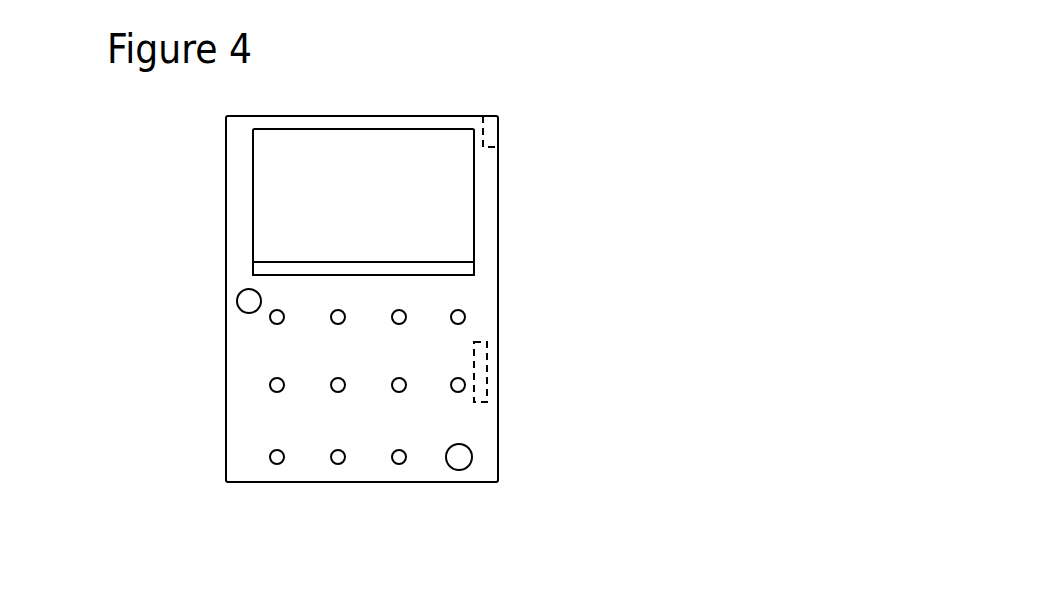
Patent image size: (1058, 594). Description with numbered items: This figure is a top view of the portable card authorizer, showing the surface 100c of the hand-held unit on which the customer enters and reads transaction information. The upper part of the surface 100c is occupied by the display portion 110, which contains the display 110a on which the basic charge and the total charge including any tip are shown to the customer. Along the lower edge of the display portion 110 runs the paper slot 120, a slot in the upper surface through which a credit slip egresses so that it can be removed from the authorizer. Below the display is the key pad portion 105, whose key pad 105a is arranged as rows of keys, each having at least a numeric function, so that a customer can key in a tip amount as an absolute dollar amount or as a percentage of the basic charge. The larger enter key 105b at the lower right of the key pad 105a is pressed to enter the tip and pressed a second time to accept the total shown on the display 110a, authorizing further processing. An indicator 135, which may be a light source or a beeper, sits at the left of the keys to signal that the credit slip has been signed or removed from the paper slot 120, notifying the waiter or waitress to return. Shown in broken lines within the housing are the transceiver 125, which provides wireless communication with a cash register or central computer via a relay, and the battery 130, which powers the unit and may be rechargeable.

The surface 100c is at (248, 358).
The key pad portion 105 is at (228, 428).
The key pad 105a is at (247, 483).
The enter key 105b is at (472, 450).
The display portion 110 is at (212, 188).
The display 110a is at (367, 162).
The paper slot 120 is at (474, 263).
The transceiver 125 is at (498, 122).
The battery 130 is at (487, 366).
The indicator 135 is at (237, 301).